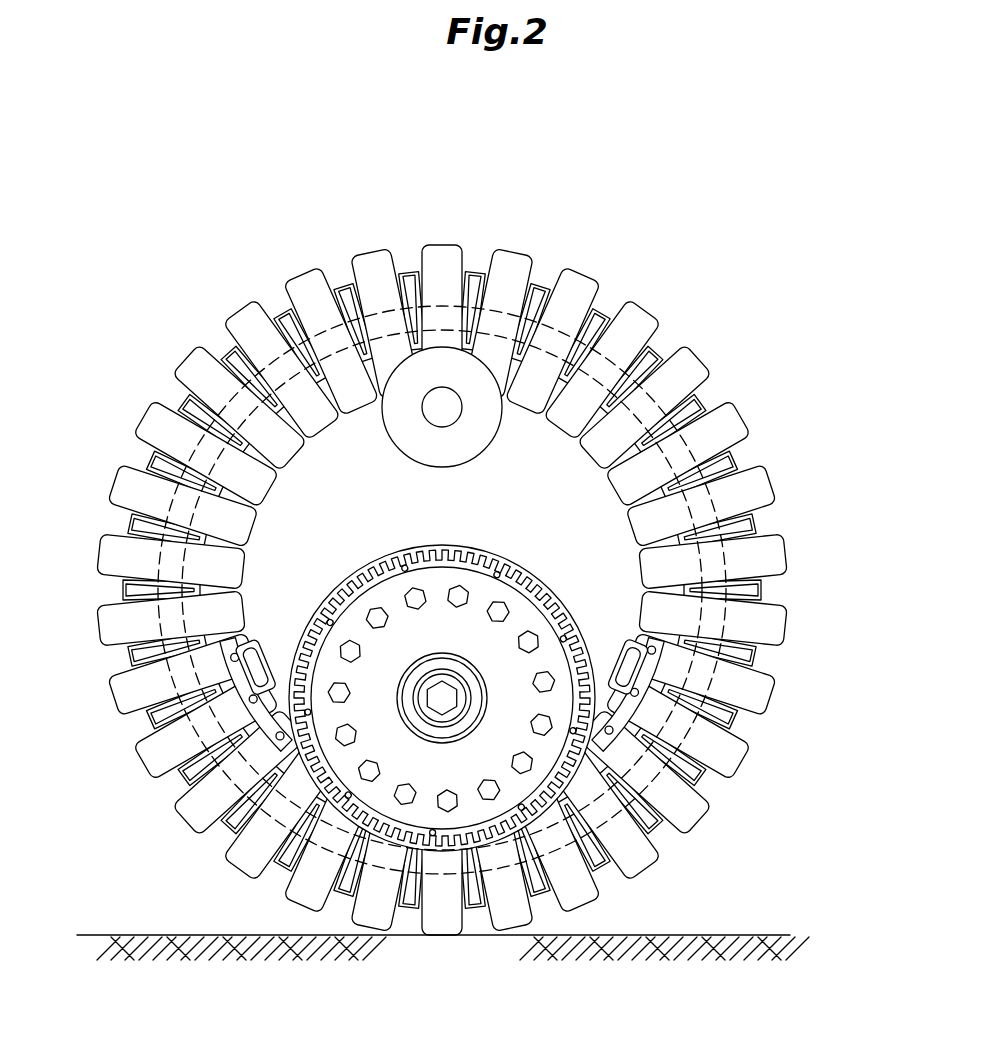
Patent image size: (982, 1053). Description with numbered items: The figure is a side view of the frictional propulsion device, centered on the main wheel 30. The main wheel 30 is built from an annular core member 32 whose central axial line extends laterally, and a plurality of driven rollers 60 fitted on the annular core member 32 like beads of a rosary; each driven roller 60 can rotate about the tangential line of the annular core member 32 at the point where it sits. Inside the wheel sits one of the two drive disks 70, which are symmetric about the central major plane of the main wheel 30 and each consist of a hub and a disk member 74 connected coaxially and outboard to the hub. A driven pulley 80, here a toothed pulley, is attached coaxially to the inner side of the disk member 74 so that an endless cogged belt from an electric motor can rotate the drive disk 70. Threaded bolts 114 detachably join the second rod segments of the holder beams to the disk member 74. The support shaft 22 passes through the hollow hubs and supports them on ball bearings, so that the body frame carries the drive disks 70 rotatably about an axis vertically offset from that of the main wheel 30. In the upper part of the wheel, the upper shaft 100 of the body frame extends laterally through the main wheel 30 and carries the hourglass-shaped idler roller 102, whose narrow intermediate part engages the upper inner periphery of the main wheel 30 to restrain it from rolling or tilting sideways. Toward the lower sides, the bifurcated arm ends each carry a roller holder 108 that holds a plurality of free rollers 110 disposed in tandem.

The support shaft 22 is at (442, 706).
The main wheel 30 is at (478, 597).
The annular core member 32 is at (700, 431).
The driven roller 60 is at (462, 246).
The drive disk 70 is at (498, 546).
The disk member 74 is at (449, 546).
The driven pulley 80 is at (541, 583).
The upper shaft 100 is at (428, 412).
The idler roller 102 is at (485, 434).
The roller holder 108 is at (263, 632).
The free roller 110 is at (282, 645).
The threaded bolt 114 is at (228, 860).